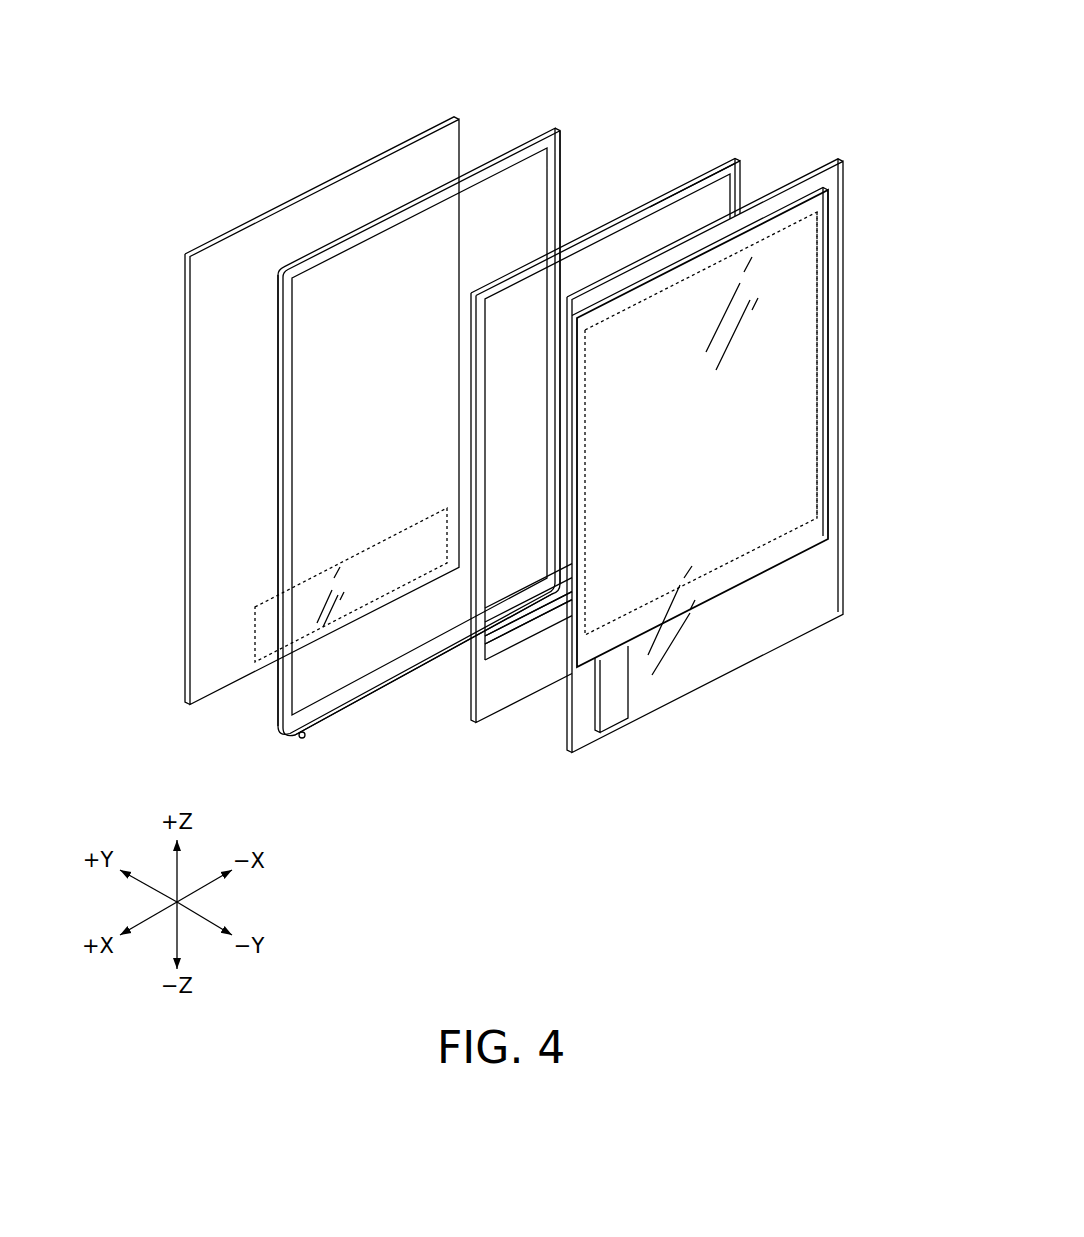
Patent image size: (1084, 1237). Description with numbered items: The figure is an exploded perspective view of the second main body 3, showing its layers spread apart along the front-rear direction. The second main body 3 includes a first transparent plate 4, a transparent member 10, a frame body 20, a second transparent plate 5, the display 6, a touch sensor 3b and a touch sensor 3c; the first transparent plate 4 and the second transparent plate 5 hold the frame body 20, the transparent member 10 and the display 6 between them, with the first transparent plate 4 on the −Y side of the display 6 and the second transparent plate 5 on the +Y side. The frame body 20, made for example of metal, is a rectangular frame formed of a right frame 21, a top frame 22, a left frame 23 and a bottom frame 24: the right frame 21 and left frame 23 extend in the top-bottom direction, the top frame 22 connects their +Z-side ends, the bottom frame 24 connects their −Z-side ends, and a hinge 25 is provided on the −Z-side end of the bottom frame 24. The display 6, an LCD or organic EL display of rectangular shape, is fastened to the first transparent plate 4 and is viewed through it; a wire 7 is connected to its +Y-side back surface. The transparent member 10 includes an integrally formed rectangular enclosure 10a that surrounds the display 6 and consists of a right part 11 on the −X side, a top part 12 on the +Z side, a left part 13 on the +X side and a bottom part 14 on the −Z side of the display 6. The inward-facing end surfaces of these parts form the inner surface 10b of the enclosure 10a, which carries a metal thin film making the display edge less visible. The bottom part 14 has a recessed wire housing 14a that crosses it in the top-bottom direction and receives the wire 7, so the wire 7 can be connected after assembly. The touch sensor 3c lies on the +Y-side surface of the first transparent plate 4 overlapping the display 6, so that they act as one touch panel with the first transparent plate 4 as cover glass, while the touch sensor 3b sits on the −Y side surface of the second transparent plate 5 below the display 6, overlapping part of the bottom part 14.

The second main body 3 is at (240, 106).
The touch sensor 3b is at (268, 658).
The touch sensor 3c is at (822, 414).
The first transparent plate 4 is at (845, 312).
The second transparent plate 5 is at (382, 152).
The display 6 is at (800, 477).
The wire 7 is at (612, 697).
The transparent member 10 is at (541, 700).
The enclosure 10a is at (643, 72).
The inner surface 10b is at (722, 200).
The right part 11 is at (744, 190).
The top part 12 is at (725, 158).
The left part 13 is at (486, 302).
The bottom part 14 is at (557, 648).
The wire housing 14a is at (518, 650).
The frame body 20 is at (545, 117).
The right frame 21 is at (563, 172).
The top frame 22 is at (483, 165).
The left frame 23 is at (280, 418).
The bottom frame 24 is at (365, 690).
The hinge 25 is at (330, 732).